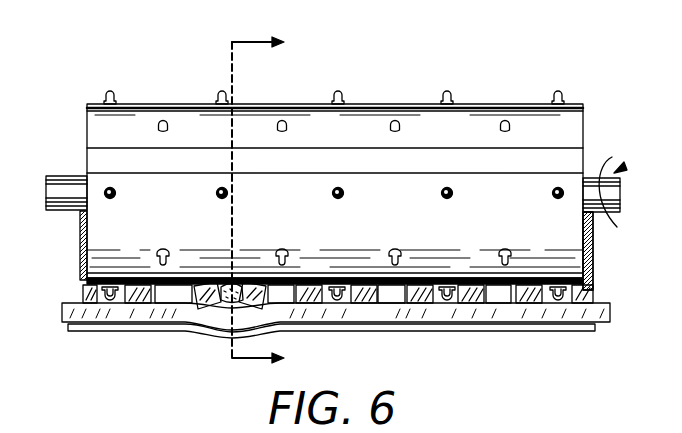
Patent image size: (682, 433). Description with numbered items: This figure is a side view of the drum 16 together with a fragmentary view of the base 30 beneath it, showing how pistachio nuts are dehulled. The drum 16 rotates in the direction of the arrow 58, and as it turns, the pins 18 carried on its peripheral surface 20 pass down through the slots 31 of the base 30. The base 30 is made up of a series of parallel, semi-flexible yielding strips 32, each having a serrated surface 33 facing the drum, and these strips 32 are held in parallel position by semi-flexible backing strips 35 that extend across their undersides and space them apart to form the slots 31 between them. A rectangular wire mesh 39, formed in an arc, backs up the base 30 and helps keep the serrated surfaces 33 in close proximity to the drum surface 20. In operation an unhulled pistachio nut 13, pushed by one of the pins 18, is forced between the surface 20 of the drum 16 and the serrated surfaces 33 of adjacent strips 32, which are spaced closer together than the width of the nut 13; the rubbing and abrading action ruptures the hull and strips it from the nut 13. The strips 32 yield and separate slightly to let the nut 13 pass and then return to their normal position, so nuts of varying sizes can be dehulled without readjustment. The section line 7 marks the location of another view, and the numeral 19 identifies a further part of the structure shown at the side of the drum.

The section line 7- 7 is at (267, 201).
The pistachio nut 13 is at (215, 300).
The drum 16 is at (583, 110).
The pins 18 is at (450, 92).
The side wall 19 is at (93, 165).
The drum surface 20 is at (572, 143).
The base 30 is at (137, 305).
The slots 31 is at (385, 302).
The yielding strips 32 is at (597, 290).
The serrated surface 33 is at (508, 290).
The backing strips 35 is at (612, 310).
The wire mesh 39 is at (595, 331).
The arrow 58 is at (620, 163).